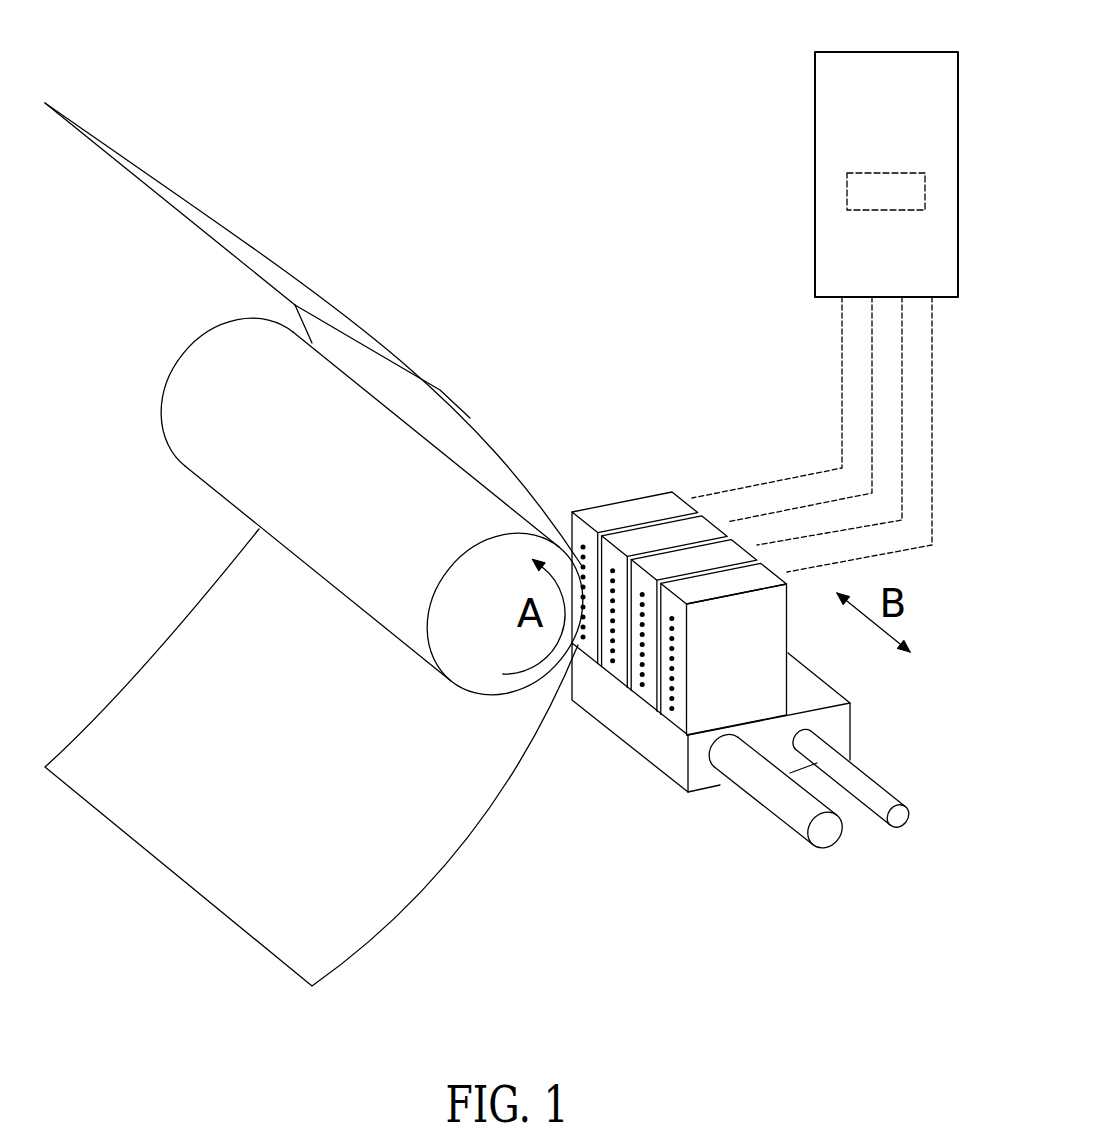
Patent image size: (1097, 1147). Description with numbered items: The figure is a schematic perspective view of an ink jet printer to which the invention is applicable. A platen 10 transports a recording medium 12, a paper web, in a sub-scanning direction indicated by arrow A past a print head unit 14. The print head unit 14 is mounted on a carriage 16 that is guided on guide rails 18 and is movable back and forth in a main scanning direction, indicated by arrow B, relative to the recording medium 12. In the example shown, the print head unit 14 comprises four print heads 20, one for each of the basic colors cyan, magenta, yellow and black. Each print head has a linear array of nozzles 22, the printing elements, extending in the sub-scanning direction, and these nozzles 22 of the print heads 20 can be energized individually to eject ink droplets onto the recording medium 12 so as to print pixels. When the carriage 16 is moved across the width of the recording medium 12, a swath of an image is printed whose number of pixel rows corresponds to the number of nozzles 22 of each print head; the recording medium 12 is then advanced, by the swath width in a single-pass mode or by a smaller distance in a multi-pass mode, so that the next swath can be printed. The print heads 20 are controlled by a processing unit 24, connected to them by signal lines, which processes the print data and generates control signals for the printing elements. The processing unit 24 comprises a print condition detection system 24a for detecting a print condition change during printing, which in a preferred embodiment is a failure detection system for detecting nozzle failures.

The platen 10 is at (183, 420).
The recording medium 12 is at (170, 183).
The print head unit 14 is at (707, 466).
The carriage 16 is at (670, 763).
The guide rails 18 is at (787, 817).
The print heads 20 is at (625, 508).
The nozzles 22 is at (643, 683).
The processing unit 24 is at (875, 80).
The print condition detection system 24a is at (845, 190).